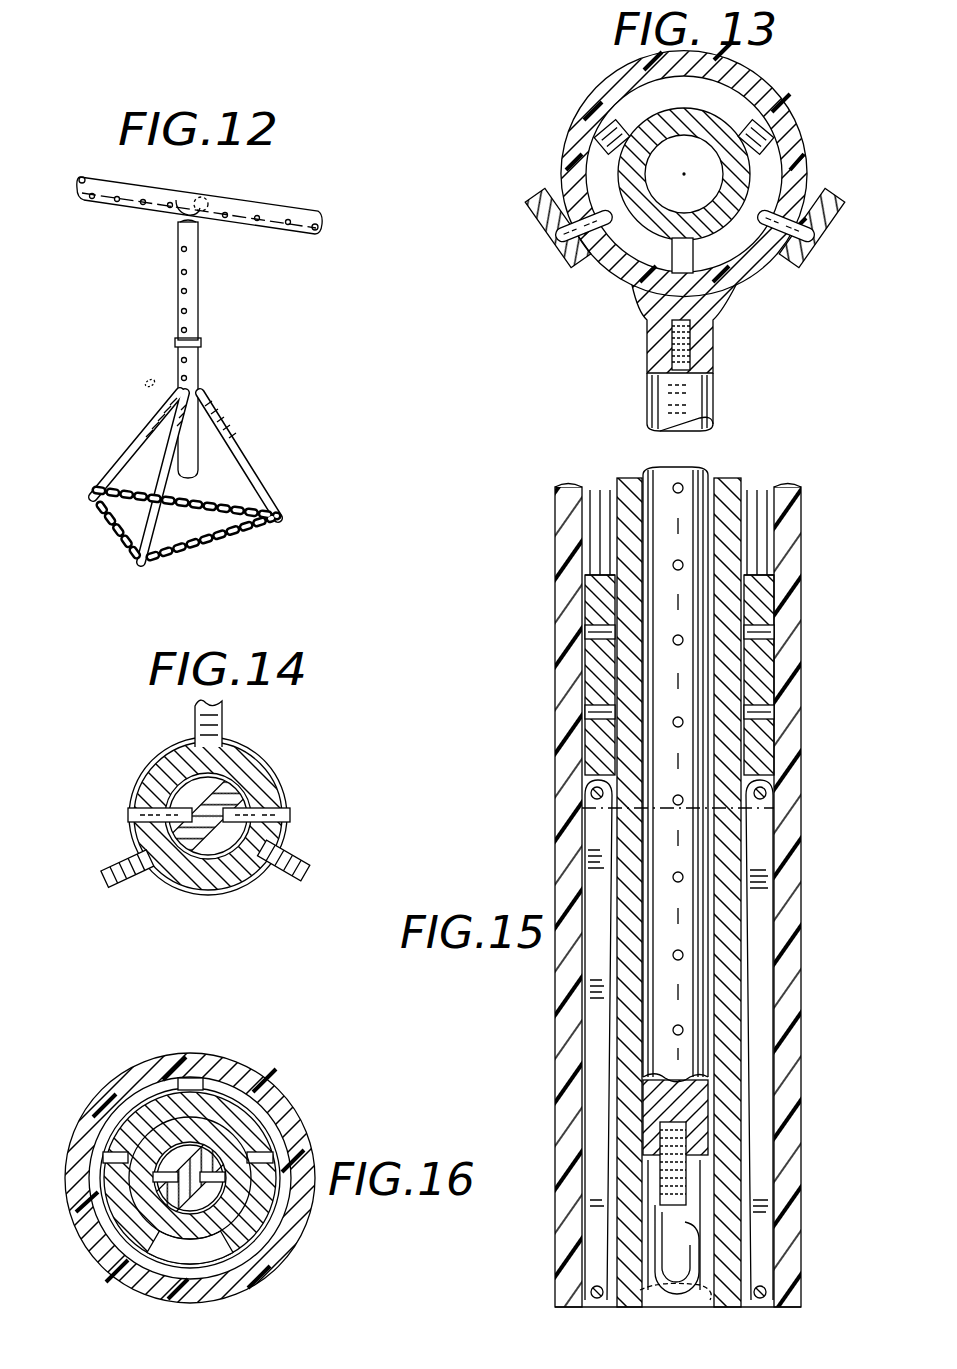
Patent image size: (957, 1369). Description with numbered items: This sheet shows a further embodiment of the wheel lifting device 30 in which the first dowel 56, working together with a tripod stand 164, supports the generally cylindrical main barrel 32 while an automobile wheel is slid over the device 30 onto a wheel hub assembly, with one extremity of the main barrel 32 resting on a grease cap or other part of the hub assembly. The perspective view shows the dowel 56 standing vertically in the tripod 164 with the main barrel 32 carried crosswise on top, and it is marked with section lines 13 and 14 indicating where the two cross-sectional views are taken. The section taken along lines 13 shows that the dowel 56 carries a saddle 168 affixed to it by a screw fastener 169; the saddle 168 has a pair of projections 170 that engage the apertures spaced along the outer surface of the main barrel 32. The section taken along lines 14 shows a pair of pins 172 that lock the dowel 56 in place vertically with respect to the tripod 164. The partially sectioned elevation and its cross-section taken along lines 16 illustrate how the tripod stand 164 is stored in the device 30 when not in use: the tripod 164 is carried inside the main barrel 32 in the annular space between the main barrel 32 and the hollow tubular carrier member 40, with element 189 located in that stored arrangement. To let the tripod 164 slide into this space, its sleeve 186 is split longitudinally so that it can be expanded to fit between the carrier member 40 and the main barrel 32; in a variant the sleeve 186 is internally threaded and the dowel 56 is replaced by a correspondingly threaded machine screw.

In FIG. 12, the device 30 is at (208, 358).
In FIG. 15, the device 30 is at (668, 876).
In FIG. 12, the main barrel 32 is at (290, 236).
In FIG. 13, the main barrel 32 is at (764, 110).
In FIG. 16, the main barrel 32 is at (228, 1058).
In FIG. 15, the main barrel 32 is at (557, 758).
In FIG. 16, the hollow tubular carrier member 40 is at (246, 1172).
In FIG. 15, the hollow tubular carrier member 40 is at (735, 482).
In FIG. 12, the first dowel 56 is at (198, 276).
In FIG. 13, the first dowel 56 is at (715, 396).
In FIG. 14, the first dowel 56 is at (209, 810).
In FIG. 16, the first dowel 56 is at (217, 1156).
In FIG. 12, the tripod stand 164 is at (236, 411).
In FIG. 14, the tripod stand 164 is at (233, 721).
In FIG. 15, the tripod stand 164 is at (760, 857).
In FIG. 13, the saddle 168 is at (682, 236).
In FIG. 13, the screw fastener 169 is at (668, 348).
In FIG. 13, the projections 170 is at (562, 238).
In FIG. 14, the pins 172 is at (122, 810).
In FIG. 16, the sleeve 186 is at (262, 1118).
In FIG. 15, the bushing 189 is at (767, 582).
In FIG. 12, the section lines 13- 13 is at (275, 186).
In FIG. 12, the section lines 14- 14 is at (244, 335).
In FIG. 15, the section lines 16- 16 is at (538, 633).